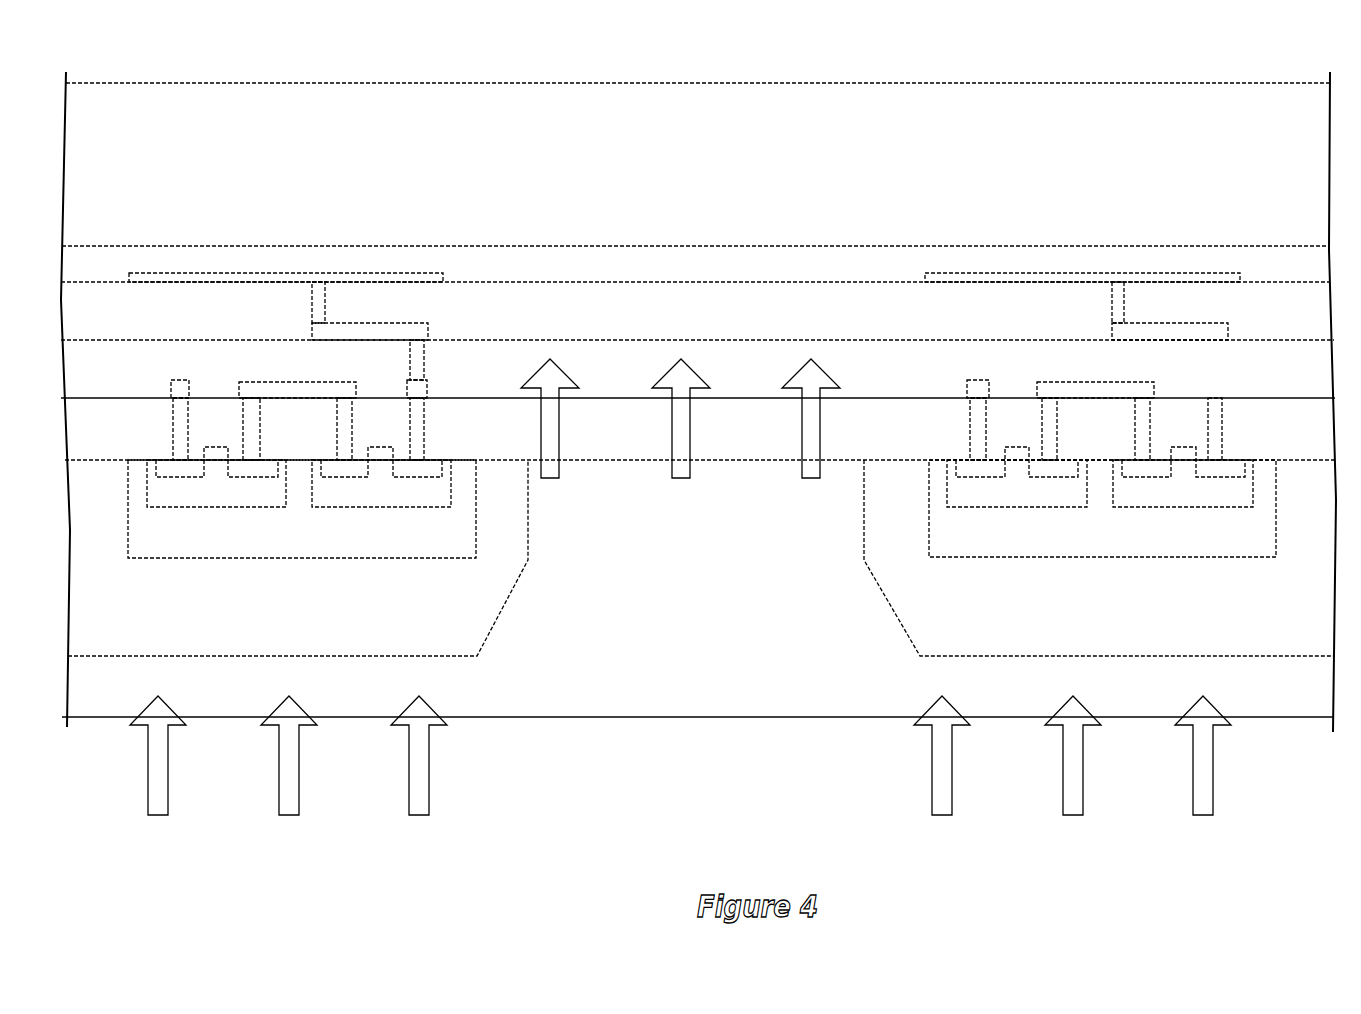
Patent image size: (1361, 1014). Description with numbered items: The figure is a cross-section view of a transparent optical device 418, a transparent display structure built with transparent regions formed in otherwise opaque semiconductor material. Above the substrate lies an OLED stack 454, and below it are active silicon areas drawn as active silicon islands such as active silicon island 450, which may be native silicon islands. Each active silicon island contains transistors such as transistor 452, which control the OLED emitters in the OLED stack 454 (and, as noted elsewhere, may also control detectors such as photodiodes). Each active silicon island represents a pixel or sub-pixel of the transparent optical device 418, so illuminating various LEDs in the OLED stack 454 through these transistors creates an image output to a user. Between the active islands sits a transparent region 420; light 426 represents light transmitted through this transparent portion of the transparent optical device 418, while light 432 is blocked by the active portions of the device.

The transparent optical device 418 is at (1300, 44).
The transparent region 420 is at (701, 558).
The light 426 is at (823, 383).
The light 432 is at (418, 771).
The active silicon island 450 is at (302, 531).
The transistor 452 is at (299, 423).
The OLED stack 454 is at (695, 293).